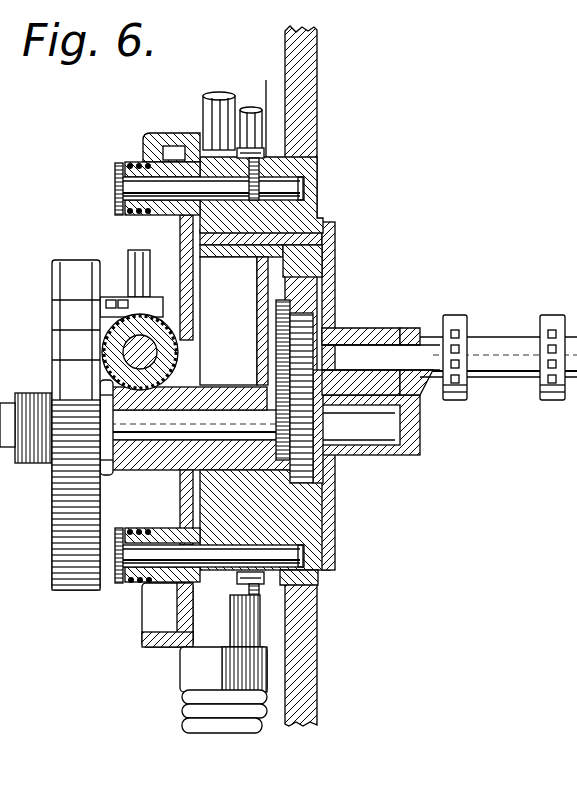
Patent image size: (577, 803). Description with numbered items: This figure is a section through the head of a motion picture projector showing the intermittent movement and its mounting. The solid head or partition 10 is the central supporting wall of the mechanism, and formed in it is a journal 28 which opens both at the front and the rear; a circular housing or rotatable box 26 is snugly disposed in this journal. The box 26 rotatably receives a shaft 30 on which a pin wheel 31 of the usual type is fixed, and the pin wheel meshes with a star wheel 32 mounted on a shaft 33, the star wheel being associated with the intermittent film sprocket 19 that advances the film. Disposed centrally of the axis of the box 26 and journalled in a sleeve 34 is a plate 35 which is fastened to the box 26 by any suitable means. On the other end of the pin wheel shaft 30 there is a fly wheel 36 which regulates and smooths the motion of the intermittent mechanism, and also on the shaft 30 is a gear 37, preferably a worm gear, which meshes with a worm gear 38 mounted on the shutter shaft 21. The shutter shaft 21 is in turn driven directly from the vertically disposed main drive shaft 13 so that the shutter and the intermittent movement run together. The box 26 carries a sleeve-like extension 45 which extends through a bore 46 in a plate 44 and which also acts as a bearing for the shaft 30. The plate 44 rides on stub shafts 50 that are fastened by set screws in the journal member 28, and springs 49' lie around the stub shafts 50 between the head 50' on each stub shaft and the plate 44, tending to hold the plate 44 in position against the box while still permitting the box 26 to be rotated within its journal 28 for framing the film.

The partition 10 is at (308, 124).
The main drive shaft 13 is at (205, 730).
The intermittent film sprocket 19 is at (462, 320).
The shutter shaft 21 is at (102, 352).
The rotatable box 26 is at (337, 240).
The journal 28 is at (312, 212).
The shaft 30 is at (231, 428).
The pin wheel 31 is at (259, 348).
The star wheel 32 is at (302, 316).
The shaft 33 is at (360, 348).
The sleeve 34 is at (407, 328).
The plate 35 is at (337, 275).
The fly wheel 36 is at (62, 325).
The gear 37 is at (128, 472).
The worm gear 38 is at (170, 323).
The plate 44 is at (180, 238).
The sleeve-like extension 45 is at (208, 385).
The bore 46 is at (172, 462).
The springs 49' is at (117, 407).
The stub shafts 50 is at (231, 356).
The head 50' is at (96, 392).